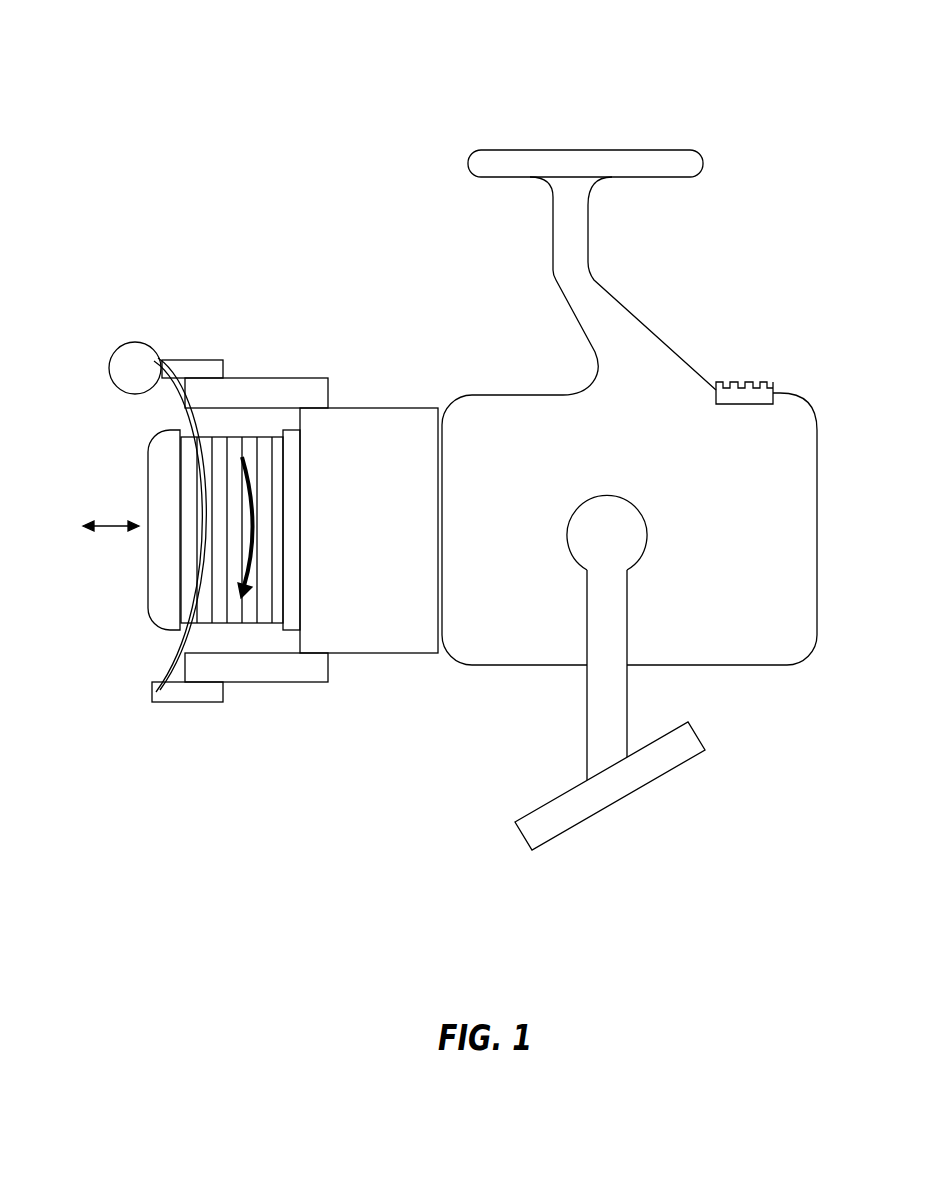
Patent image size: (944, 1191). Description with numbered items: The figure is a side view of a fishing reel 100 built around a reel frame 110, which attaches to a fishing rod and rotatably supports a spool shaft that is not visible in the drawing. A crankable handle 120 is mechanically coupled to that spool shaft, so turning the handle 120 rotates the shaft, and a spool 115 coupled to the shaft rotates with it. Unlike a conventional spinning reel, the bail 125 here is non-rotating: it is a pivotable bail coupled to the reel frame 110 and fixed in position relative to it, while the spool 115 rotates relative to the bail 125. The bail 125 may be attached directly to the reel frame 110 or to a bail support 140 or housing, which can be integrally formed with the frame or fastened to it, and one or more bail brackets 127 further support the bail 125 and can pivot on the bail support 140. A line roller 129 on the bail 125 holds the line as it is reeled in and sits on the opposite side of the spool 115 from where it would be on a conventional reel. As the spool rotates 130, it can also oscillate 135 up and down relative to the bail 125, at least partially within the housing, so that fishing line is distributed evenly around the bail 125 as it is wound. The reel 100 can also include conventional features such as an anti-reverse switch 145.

The fishing reel 100 is at (196, 113).
The reel frame 110 is at (480, 163).
The spool 115 is at (157, 487).
The crankable handle 120 is at (627, 782).
The non-rotating pivotable bail 125 is at (178, 668).
The bail bracket 127 is at (188, 368).
The line roller 129 is at (125, 360).
The spool rotation 130 is at (258, 520).
The spool oscillation 135 is at (92, 525).
The bail support 140 is at (352, 420).
The anti-reverse switch 145 is at (770, 390).